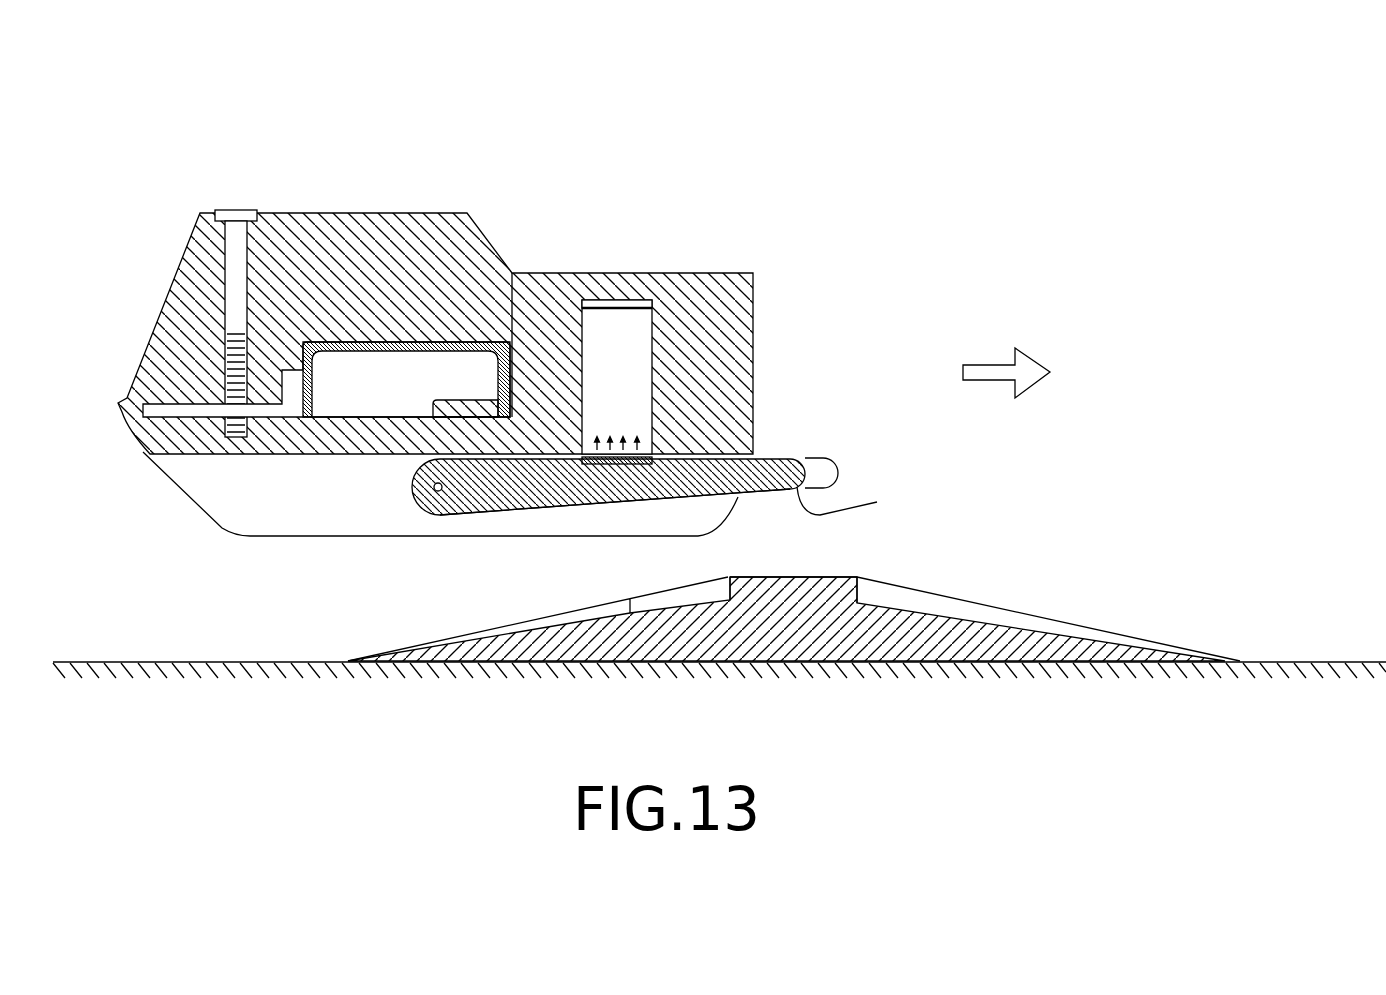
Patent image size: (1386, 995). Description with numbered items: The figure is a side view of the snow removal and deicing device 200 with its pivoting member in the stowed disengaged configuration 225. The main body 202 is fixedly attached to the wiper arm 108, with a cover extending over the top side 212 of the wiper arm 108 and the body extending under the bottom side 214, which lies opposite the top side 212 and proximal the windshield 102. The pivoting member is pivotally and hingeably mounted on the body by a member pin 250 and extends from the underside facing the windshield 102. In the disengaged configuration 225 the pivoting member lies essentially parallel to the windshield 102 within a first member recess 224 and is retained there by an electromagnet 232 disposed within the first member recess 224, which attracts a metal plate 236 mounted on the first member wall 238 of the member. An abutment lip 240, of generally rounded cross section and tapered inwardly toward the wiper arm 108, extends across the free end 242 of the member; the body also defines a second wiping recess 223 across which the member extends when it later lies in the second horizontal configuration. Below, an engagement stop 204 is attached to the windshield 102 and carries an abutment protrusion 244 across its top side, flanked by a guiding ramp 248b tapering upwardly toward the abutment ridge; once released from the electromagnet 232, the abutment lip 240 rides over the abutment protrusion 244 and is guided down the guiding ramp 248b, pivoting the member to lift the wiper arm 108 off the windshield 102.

The windshield 102 is at (197, 660).
The wiper arm 108 is at (357, 350).
The snow removal and deicing device 200 is at (952, 178).
The main body 202 is at (290, 213).
The engagement stop 204 is at (713, 637).
The top side 212 is at (412, 308).
The bottom side 214 is at (392, 382).
The second wiping recess 223 is at (207, 487).
The first member recess 224 is at (703, 510).
The stowed disengaged configuration 225 is at (501, 540).
The electromagnet 232 is at (625, 325).
The metal plate 236 is at (618, 465).
The first member wall 238 is at (796, 422).
The abutment lip 240 is at (838, 472).
The free end 242 is at (870, 498).
The abutment protrusion 244 is at (812, 578).
The guiding ramp 248b is at (630, 597).
The member pin 250 is at (436, 493).